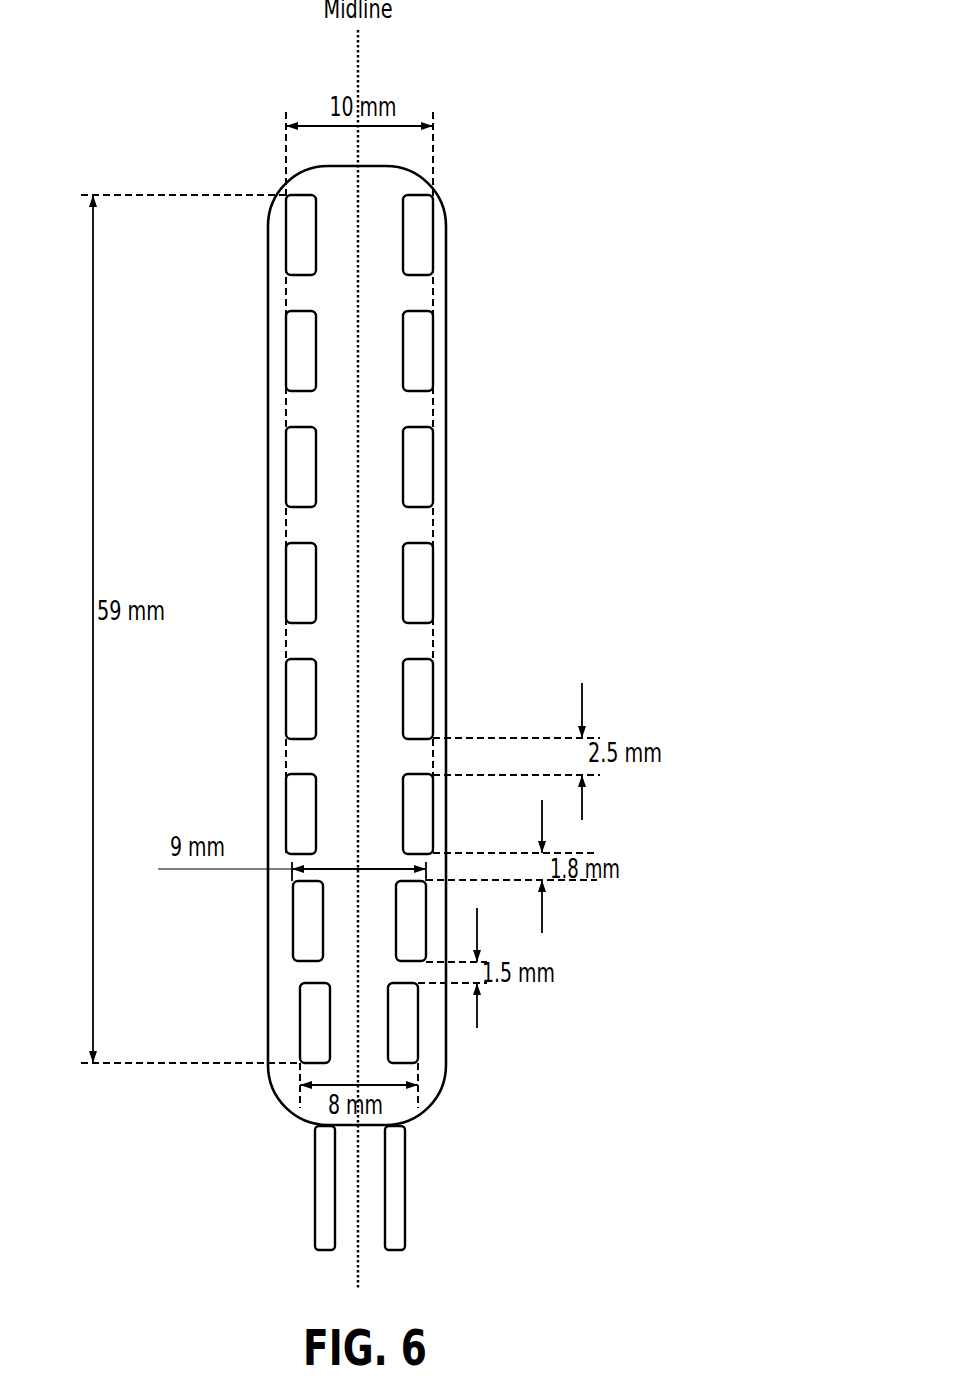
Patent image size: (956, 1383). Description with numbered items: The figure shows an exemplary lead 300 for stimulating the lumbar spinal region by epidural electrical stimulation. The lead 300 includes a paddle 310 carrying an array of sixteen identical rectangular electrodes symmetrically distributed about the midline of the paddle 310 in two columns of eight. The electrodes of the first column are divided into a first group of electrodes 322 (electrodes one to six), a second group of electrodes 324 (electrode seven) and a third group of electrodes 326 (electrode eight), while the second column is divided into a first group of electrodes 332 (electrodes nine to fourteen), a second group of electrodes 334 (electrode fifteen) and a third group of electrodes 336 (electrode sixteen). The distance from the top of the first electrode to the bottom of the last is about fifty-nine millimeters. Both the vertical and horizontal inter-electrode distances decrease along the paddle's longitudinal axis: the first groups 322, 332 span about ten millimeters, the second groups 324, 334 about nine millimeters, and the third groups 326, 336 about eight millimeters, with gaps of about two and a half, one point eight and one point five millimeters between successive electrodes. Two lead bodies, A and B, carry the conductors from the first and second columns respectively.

The lead 300 is at (385, 663).
The paddle 310 is at (447, 618).
The first group of electrodes 322 is at (288, 447).
The first group of electrodes 332 is at (432, 447).
The second group of electrodes 324 is at (290, 938).
The third group of electrodes 326 is at (298, 1025).
The second group of electrodes 334 is at (430, 917).
The third group of electrodes 336 is at (420, 1027).